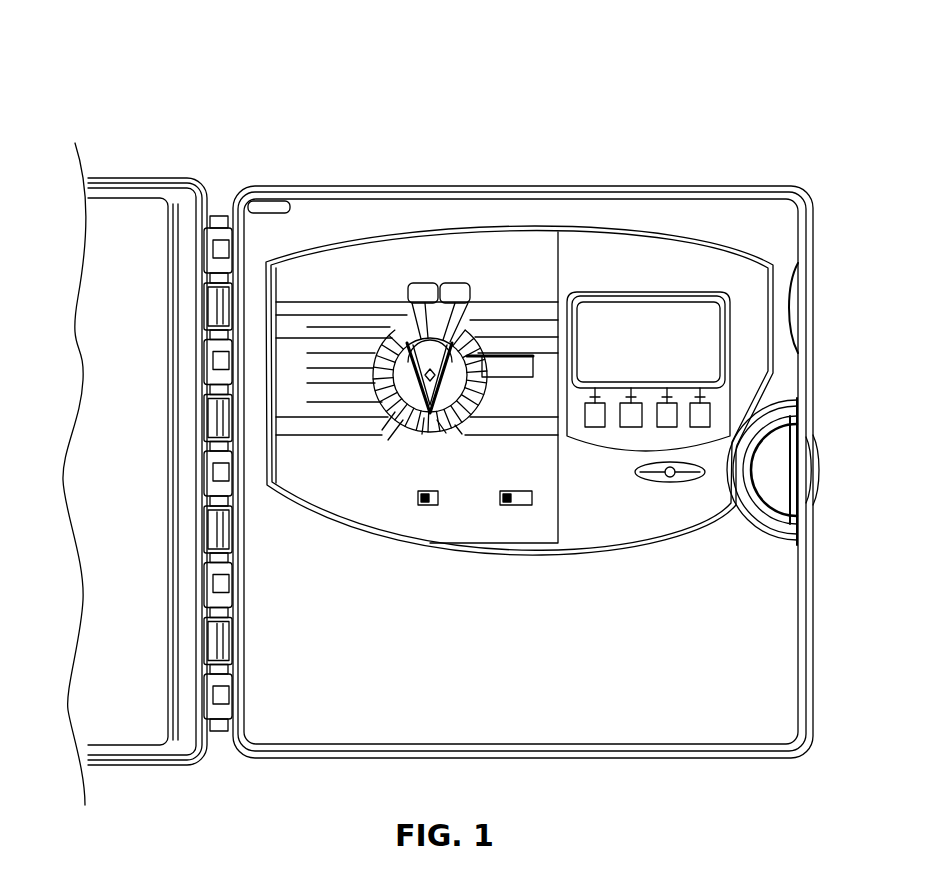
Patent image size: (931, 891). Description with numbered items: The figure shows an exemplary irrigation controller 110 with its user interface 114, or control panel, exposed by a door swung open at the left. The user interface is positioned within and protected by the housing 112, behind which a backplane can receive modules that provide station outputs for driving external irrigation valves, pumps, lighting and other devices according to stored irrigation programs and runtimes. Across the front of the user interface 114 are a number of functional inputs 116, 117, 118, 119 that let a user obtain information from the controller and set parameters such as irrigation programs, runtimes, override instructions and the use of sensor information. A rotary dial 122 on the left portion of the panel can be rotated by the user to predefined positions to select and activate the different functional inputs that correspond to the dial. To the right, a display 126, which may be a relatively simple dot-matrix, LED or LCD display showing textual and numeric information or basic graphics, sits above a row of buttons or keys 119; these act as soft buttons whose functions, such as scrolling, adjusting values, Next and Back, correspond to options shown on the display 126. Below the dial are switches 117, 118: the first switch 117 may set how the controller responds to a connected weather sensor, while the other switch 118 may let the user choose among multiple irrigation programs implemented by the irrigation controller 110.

The irrigation controller 110 is at (318, 117).
The housing 112 is at (200, 182).
The user interface 114 is at (573, 244).
The functional input 116 is at (355, 310).
The first switch 117 is at (424, 506).
The switch 118 is at (505, 506).
The buttons or keys 119 is at (667, 421).
The rotary dial 122 is at (417, 404).
The display 126 is at (653, 313).